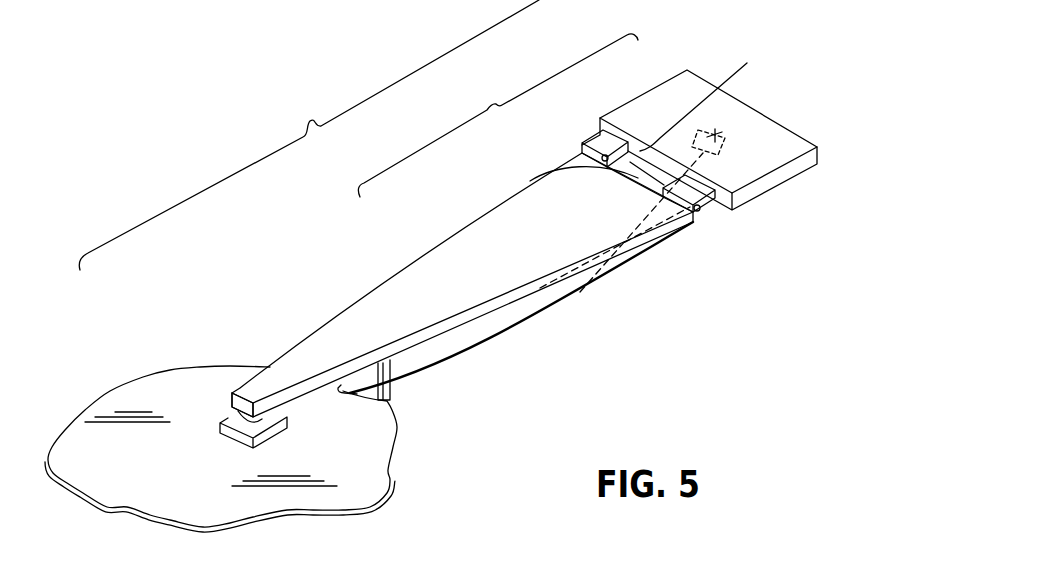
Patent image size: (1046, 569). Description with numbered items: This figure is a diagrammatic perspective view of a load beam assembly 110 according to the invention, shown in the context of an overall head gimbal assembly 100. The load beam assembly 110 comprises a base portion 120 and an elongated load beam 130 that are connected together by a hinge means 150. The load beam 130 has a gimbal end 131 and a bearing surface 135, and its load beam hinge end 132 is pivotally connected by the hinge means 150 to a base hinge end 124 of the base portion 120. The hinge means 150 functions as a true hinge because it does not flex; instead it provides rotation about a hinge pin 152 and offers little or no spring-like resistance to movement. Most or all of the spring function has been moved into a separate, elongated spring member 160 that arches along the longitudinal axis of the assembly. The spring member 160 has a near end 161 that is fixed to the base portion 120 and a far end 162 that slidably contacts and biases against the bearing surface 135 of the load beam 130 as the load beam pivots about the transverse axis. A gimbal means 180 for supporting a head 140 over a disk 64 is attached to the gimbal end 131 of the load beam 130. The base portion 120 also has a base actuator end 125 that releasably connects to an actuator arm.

The disk 64 is at (130, 383).
The head gimbal assembly 100 is at (309, 135).
The load beam assembly 110 is at (498, 115).
The base portion 120 is at (792, 137).
The base hinge end 124 is at (656, 110).
The base actuator end 125 is at (695, 68).
The load beam 130 is at (462, 235).
The gimbal end 131 is at (242, 392).
The load beam hinge end 132 is at (530, 181).
The bearing surface 135 is at (400, 398).
The head 140 is at (237, 443).
The hinge means 150 is at (590, 143).
The hinge pin 152 is at (703, 216).
The spring member 160 is at (515, 327).
The near end 161 is at (779, 111).
The far end 162 is at (340, 391).
The gimbal means 180 is at (230, 415).